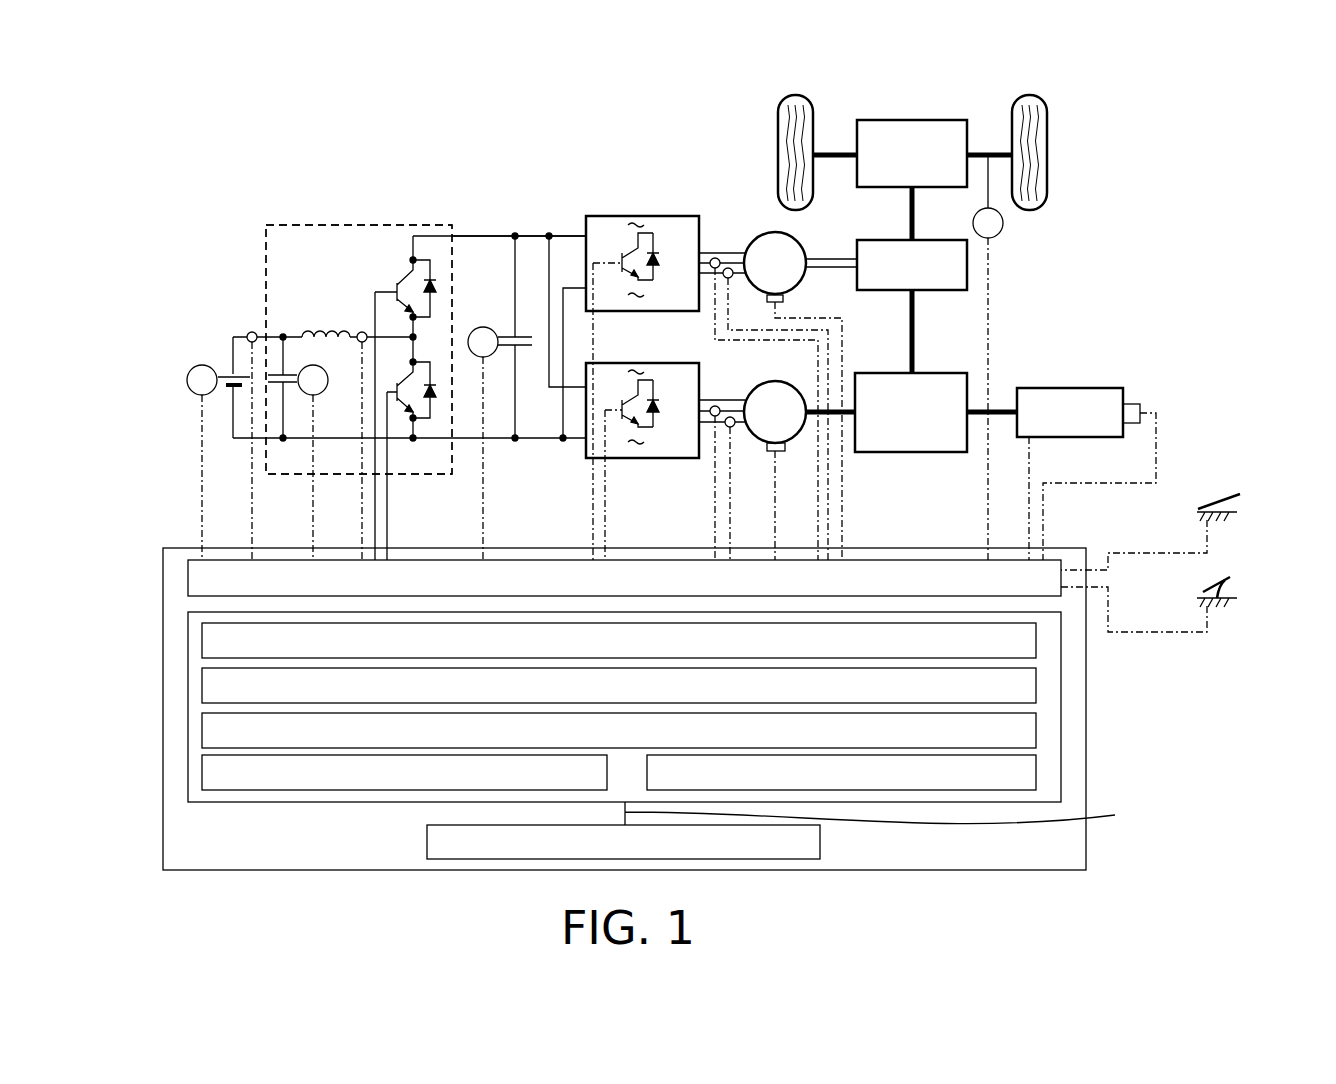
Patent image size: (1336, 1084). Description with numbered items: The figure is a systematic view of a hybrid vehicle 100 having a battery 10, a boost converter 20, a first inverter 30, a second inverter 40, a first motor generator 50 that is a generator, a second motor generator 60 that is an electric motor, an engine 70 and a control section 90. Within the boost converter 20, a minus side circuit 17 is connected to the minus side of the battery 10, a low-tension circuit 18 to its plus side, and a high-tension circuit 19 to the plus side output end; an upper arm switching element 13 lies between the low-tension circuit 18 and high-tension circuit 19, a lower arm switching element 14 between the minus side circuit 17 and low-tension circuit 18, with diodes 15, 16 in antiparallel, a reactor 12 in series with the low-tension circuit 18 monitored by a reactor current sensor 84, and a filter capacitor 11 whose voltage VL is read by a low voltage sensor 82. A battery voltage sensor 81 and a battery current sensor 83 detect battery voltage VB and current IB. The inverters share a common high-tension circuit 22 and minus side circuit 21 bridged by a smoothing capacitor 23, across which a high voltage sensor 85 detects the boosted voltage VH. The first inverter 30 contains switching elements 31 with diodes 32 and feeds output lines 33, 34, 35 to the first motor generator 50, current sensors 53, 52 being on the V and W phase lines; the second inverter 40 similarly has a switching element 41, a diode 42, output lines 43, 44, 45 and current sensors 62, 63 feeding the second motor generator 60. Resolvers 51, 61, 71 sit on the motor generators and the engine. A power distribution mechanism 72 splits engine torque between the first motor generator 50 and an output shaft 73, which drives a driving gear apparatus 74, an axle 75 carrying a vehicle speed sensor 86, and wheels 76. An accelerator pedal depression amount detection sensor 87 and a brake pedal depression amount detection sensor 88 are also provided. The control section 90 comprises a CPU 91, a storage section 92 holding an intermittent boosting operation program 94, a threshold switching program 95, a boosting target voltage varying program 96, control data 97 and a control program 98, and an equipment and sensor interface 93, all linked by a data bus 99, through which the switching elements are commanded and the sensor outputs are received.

The battery 10 is at (225, 345).
The filter capacitor 11 is at (277, 335).
The reactor 12 is at (325, 330).
The upper arm switching element 13 is at (395, 282).
The lower arm switching element 14 is at (411, 425).
The diode 15 is at (430, 280).
The diode 16 is at (431, 402).
The minus side circuit 17 is at (345, 476).
The low-tension circuit 18 is at (240, 337).
The high-tension circuit 19 is at (438, 225).
The boost converter 20 is at (450, 225).
The minus side circuit 21 is at (500, 440).
The high-tension circuit 22 is at (483, 236).
The smoothing capacitor 23 is at (522, 349).
The first inverter 30 is at (642, 461).
The switching element 31 is at (632, 420).
The diode 32 is at (656, 428).
The output line 33 is at (706, 400).
The output line 34 is at (722, 410).
The output line 35 is at (741, 398).
The second inverter 40 is at (634, 321).
The switching element 41 is at (620, 255).
The diode 42 is at (657, 258).
The output line 43 is at (706, 253).
The output line 44 is at (722, 262).
The output line 45 is at (738, 273).
The first motor generator 50 is at (748, 438).
The resolver 51 is at (785, 449).
The current sensor 52 is at (731, 428).
The current sensor 53 is at (715, 417).
The second motor generator 60 is at (797, 241).
The resolver 61 is at (783, 299).
The current sensor 62 is at (730, 278).
The current sensor 63 is at (713, 258).
The engine 70 is at (1090, 388).
The resolver 71 is at (1135, 403).
The power distribution mechanism 72 is at (970, 380).
The output shaft 73 is at (940, 291).
The driving gear apparatus 74 is at (905, 120).
The axle 75 is at (997, 150).
The wheels 76 is at (1047, 140).
The battery voltage sensor 81 is at (190, 392).
The low voltage sensor 82 is at (321, 393).
The battery current sensor 83 is at (250, 332).
The reactor current sensor 84 is at (360, 331).
The high voltage sensor 85 is at (485, 327).
The vehicle speed sensor 86 is at (1003, 228).
The accelerator pedal depression amount detection sensor 87 is at (1237, 514).
The brake pedal depression amount detection sensor 88 is at (1237, 600).
The control section 90 is at (1086, 840).
The CPU 91 is at (820, 845).
The storage section 92 is at (1061, 785).
The equipment and sensor interface 93 is at (1057, 561).
The intermittent boosting operation program 94 is at (1036, 634).
The threshold switching program 95 is at (1036, 685).
The boosting target voltage varying program 96 is at (1036, 728).
The control data 97 is at (202, 768).
The control program 98 is at (1036, 768).
The data bus 99 is at (883, 813).
The hybrid vehicle 100 is at (1163, 146).